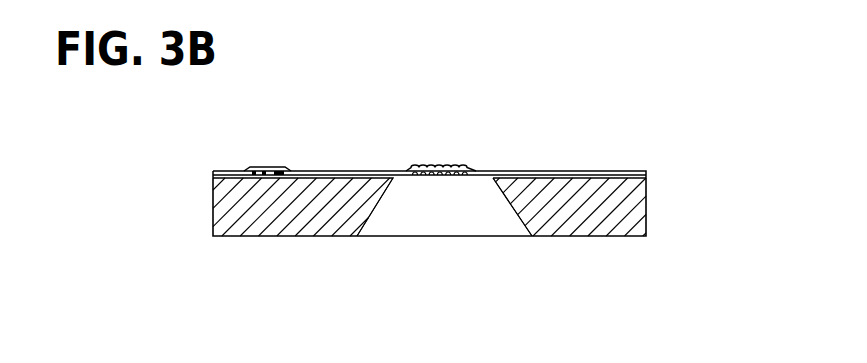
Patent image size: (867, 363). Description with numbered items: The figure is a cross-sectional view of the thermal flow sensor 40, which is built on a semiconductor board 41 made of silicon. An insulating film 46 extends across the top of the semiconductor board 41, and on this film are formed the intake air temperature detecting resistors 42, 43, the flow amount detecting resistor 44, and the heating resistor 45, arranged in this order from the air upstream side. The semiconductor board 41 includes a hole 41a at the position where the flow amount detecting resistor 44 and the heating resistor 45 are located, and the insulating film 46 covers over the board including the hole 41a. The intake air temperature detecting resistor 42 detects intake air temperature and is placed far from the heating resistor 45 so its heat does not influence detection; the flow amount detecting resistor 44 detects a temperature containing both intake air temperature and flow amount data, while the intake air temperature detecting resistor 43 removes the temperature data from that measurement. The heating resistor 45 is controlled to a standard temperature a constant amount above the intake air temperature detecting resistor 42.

The thermal flow sensor 40 is at (649, 207).
The semiconductor board 41 is at (585, 236).
The hole 41a is at (440, 218).
The intake air temperature detecting resistor 42 is at (265, 170).
The intake air temperature detecting resistor 43 is at (278, 170).
The flow amount detecting resistor 44 is at (415, 168).
The heating resistor 45 is at (458, 167).
The insulating film 46 is at (622, 177).